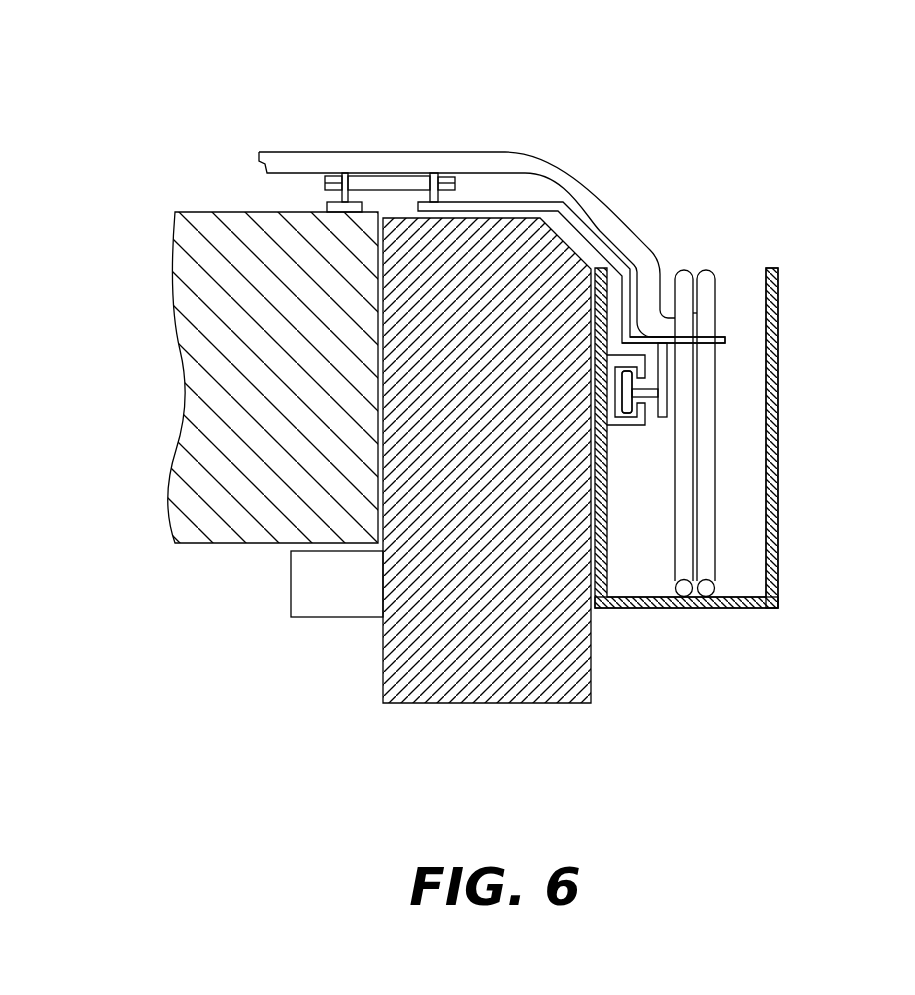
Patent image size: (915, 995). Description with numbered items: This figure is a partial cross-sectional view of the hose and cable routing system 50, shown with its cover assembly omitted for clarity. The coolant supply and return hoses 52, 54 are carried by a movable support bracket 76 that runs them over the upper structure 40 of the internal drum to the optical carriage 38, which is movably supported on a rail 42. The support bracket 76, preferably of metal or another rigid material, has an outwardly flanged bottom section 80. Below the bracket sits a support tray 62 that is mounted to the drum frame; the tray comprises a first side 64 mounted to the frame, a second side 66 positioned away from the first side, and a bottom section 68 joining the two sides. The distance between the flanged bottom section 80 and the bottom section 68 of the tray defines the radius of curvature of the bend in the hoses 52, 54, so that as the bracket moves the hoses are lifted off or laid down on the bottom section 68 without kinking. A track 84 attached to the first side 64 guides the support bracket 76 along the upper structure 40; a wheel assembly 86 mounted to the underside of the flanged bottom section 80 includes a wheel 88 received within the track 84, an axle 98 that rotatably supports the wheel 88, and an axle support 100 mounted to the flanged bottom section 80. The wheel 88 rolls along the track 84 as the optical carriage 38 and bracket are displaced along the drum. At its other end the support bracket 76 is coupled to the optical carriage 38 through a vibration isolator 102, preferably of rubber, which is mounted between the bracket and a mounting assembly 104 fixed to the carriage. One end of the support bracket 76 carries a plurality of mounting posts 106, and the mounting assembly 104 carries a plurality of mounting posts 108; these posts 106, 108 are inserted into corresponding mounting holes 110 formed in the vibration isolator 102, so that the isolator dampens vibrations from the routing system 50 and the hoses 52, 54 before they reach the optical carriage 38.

The optical carriage 38 is at (195, 238).
The upper structure 40 is at (398, 636).
The rail 42 is at (300, 601).
The hose and cable routing system 50 is at (828, 163).
The coolant supply hose 52 is at (682, 517).
The coolant return hose 54 is at (710, 517).
The support tray 62 is at (796, 296).
The first side 64 is at (605, 578).
The second side 66 is at (778, 578).
The bottom section 68 is at (708, 610).
The support bracket 76 is at (598, 247).
The outwardly flanged bottom section 80 is at (722, 340).
The track 84 is at (613, 425).
The wheel assembly 86 is at (658, 436).
The wheel 88 is at (627, 377).
The axle 98 is at (652, 393).
The axle support 100 is at (665, 408).
The vibration isolator 102 is at (408, 184).
The mounting assembly 104 is at (330, 207).
The mounting posts 106 is at (436, 175).
The mounting posts 108 is at (343, 175).
The mounting holes 110 is at (327, 182).